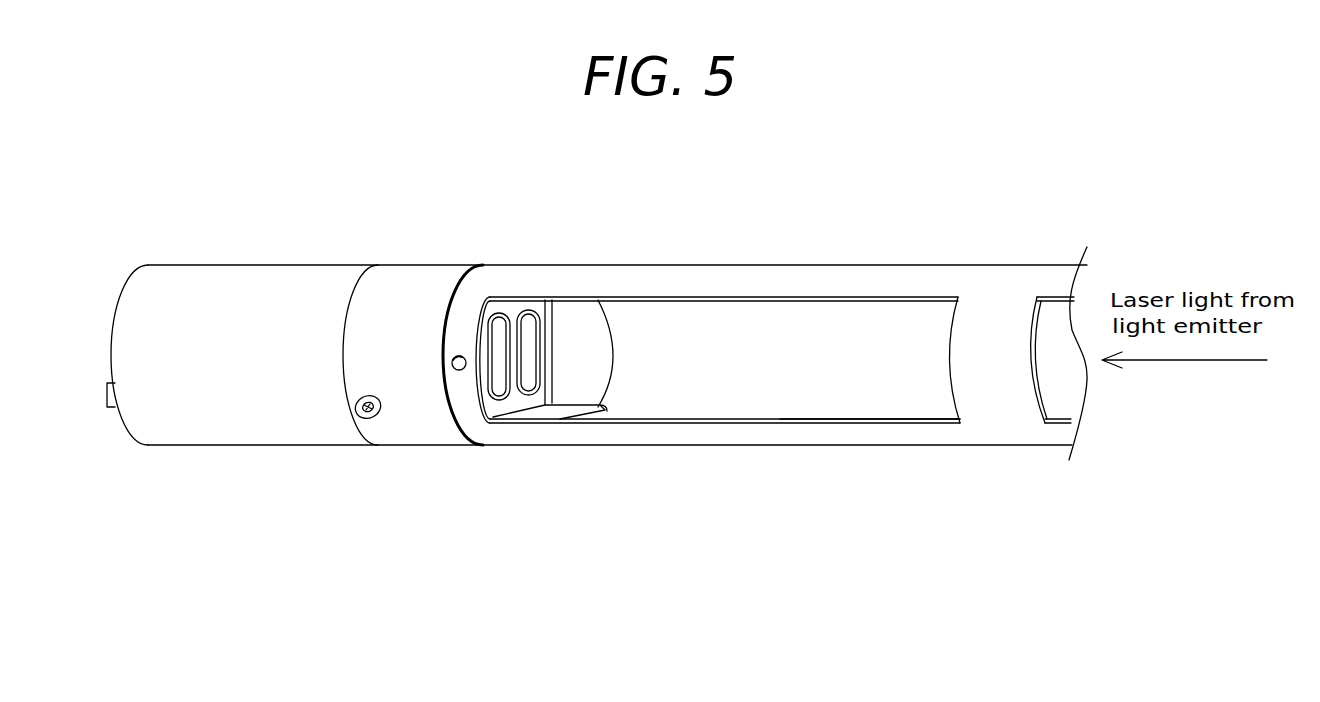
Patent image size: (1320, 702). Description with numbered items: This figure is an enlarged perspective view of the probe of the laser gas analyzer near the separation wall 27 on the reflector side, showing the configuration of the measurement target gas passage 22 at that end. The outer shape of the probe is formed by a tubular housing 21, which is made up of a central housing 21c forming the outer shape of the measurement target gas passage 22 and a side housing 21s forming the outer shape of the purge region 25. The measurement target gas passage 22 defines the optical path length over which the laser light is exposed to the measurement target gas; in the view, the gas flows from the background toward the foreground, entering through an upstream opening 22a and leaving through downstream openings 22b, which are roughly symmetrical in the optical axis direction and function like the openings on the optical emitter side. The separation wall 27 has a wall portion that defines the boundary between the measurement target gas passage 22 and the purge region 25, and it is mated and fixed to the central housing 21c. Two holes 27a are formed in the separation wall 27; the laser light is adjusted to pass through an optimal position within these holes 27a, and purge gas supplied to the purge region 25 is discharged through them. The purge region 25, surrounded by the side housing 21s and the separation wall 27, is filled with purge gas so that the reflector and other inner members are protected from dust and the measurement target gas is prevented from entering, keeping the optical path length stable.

The housing 21 is at (597, 330).
The side housing 21s is at (240, 278).
The central housing 21c is at (758, 278).
The measurement target gas passage 22 is at (750, 455).
The upstream opening 22a is at (575, 323).
The downstream opening 22b is at (877, 397).
The purge region 25 is at (228, 455).
The separation wall 27 is at (517, 398).
The hole 27a is at (498, 325).